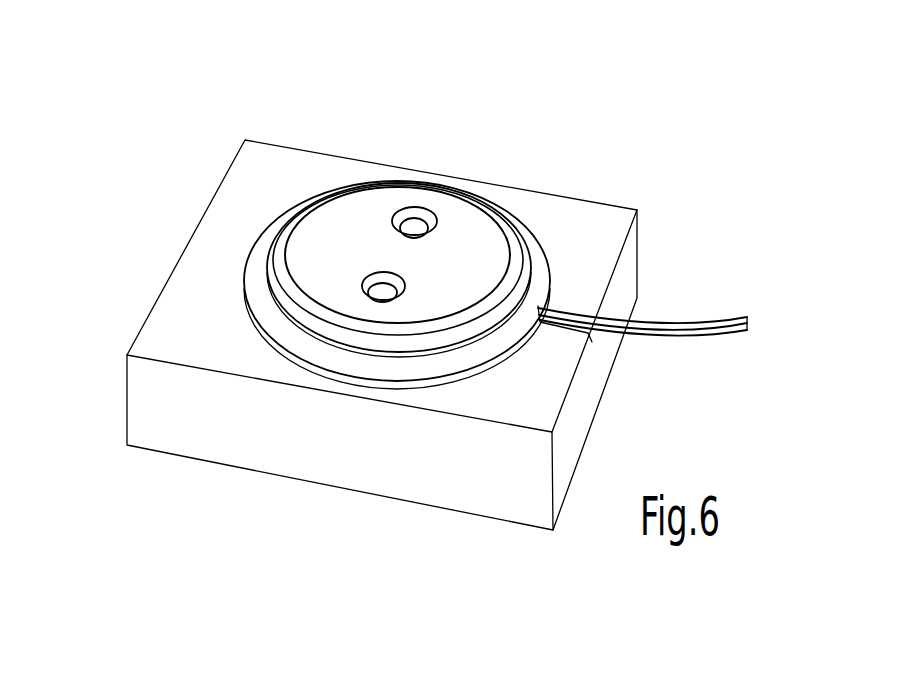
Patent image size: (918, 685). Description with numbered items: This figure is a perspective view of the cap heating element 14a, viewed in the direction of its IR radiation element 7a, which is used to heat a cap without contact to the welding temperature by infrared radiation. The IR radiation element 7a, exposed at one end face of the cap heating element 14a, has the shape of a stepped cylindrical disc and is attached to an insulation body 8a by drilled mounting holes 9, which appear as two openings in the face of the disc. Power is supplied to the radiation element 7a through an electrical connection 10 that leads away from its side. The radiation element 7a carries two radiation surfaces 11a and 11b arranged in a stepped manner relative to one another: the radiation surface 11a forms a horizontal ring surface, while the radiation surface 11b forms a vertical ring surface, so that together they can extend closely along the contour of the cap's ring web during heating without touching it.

The IR radiation element 7a is at (262, 358).
The insulation body 8a is at (282, 437).
The drilled mounting holes 9 is at (378, 288).
The electrical connection 10 is at (683, 322).
The radiation surface 11a is at (350, 333).
The radiation surface 11b is at (418, 322).
The cap heating element 14a is at (632, 183).